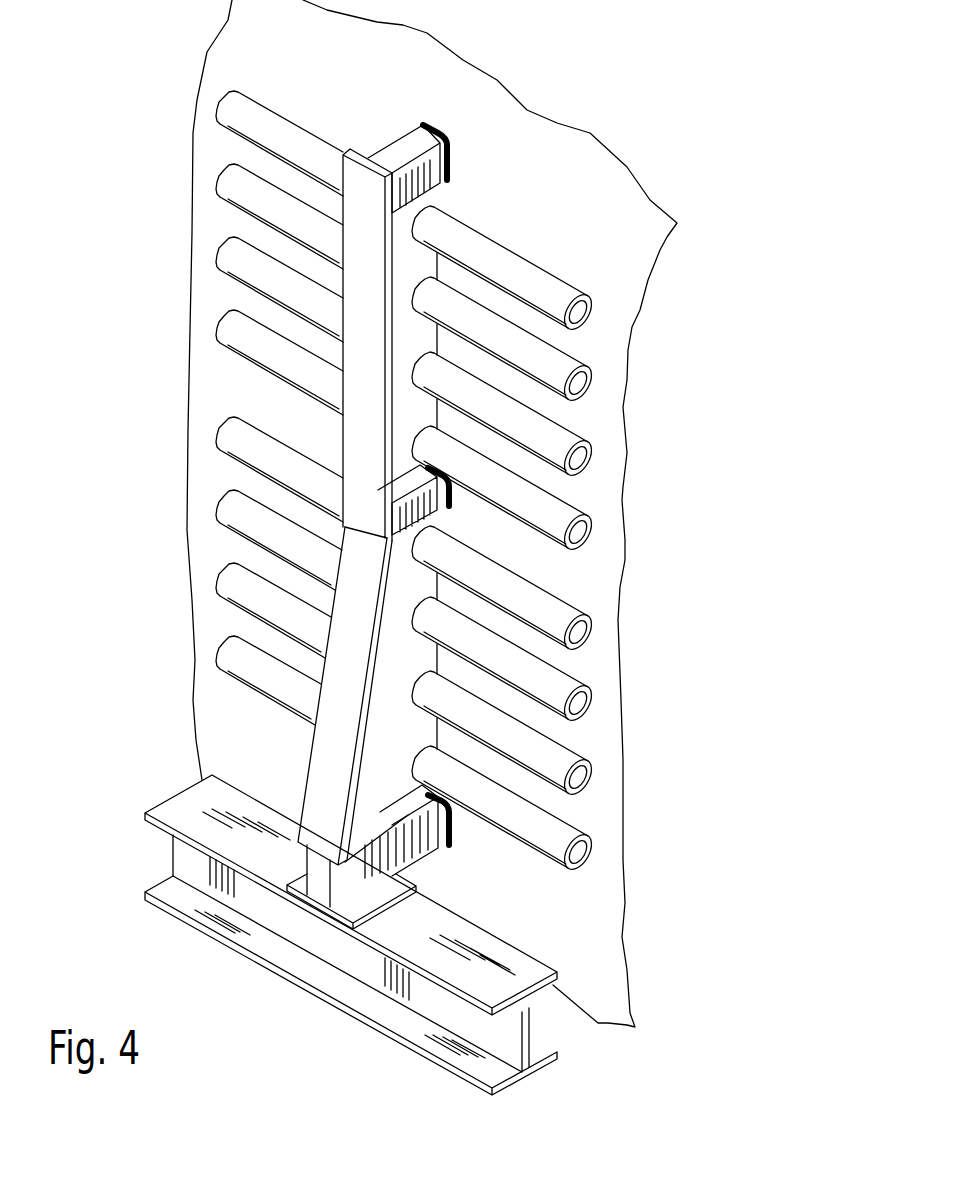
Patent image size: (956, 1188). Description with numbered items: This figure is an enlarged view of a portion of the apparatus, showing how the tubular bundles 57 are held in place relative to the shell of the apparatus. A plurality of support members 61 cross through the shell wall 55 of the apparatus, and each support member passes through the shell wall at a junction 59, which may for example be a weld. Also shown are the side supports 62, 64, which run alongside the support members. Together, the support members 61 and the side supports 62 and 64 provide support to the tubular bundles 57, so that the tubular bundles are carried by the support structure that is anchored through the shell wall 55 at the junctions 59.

The shell wall 55 is at (623, 308).
The tubular bundles 57 is at (560, 503).
The junction 59 is at (457, 153).
The support members 61 is at (398, 157).
The side support 62 is at (370, 357).
The side support 64 is at (343, 600).